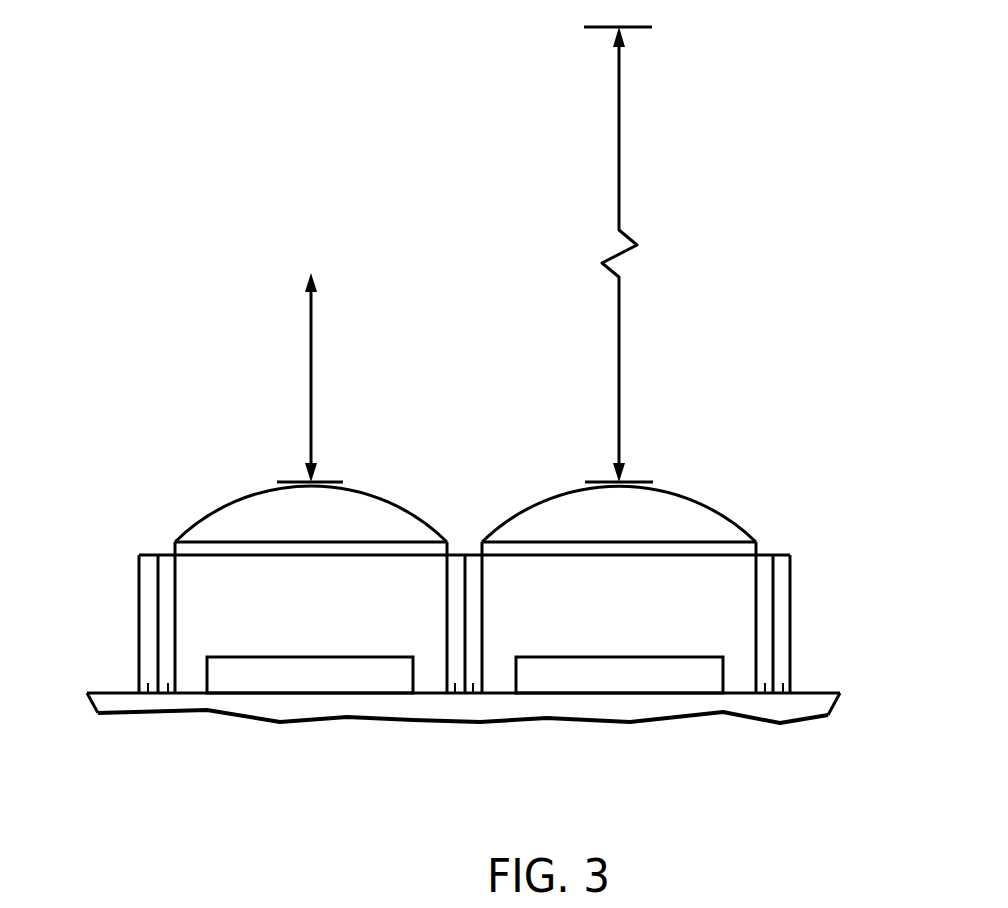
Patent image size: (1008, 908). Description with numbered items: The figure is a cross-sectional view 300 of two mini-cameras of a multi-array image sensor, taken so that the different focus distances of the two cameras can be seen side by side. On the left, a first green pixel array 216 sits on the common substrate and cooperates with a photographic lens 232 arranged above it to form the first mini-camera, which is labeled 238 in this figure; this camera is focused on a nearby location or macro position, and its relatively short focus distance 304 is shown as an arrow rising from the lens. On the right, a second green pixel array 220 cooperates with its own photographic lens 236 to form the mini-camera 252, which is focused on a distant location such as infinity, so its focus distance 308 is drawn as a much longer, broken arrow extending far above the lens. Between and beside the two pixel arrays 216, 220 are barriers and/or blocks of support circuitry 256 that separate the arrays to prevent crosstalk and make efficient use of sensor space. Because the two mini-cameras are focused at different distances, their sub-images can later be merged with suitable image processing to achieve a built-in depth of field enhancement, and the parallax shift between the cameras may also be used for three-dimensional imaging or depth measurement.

The cross-sectional view 300 is at (300, 160).
The first green pixel array 216 is at (335, 657).
The second green pixel array 220 is at (637, 657).
The photographic lens 232 is at (248, 496).
The photographic lens 236 is at (560, 494).
The first light emitting device 238 is at (371, 466).
The mini-camera 252 is at (687, 474).
The barriers and/or blocks of support circuitry 256 is at (168, 683).
The focus distance 304 is at (311, 340).
The focus distance 308 is at (619, 177).